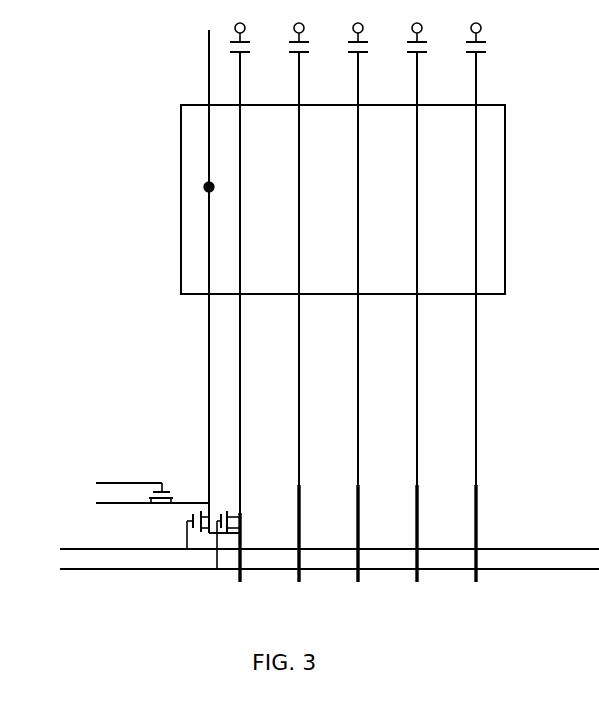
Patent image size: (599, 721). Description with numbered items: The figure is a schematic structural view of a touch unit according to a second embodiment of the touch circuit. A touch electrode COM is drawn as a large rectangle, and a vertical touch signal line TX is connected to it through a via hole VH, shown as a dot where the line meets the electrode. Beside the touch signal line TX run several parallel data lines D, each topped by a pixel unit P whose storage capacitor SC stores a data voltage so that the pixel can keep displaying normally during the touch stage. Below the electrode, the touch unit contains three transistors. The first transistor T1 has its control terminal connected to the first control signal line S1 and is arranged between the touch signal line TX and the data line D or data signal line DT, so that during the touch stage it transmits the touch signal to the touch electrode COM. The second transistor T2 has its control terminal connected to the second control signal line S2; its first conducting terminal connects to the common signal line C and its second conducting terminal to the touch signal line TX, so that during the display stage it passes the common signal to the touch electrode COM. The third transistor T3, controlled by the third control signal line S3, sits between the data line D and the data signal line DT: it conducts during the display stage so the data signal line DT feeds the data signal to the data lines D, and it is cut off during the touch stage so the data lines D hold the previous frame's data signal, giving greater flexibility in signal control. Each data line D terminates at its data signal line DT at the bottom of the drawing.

The touch signal line TX is at (217, 271).
The pixel unit P is at (235, 32).
The data line D is at (364, 268).
The storage capacitor SC is at (485, 52).
The via hole VH is at (205, 185).
The touch electrode COM is at (181, 210).
The second control signal line S2 is at (112, 484).
The common signal line C is at (138, 507).
The second transistor T2 is at (164, 480).
The first transistor T1 is at (185, 530).
The third transistor T3 is at (244, 540).
The first control signal line S1 is at (312, 549).
The third control signal line S3 is at (312, 571).
The data signal line DT is at (365, 551).